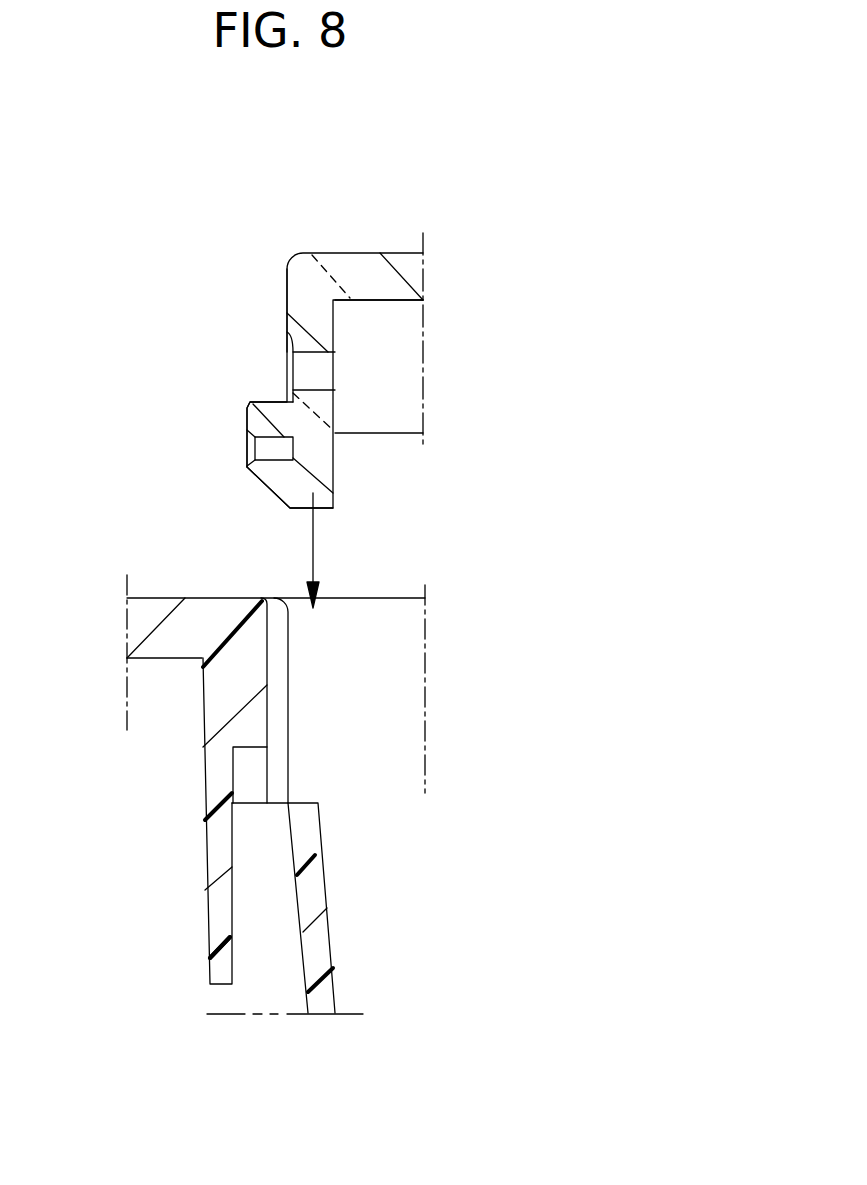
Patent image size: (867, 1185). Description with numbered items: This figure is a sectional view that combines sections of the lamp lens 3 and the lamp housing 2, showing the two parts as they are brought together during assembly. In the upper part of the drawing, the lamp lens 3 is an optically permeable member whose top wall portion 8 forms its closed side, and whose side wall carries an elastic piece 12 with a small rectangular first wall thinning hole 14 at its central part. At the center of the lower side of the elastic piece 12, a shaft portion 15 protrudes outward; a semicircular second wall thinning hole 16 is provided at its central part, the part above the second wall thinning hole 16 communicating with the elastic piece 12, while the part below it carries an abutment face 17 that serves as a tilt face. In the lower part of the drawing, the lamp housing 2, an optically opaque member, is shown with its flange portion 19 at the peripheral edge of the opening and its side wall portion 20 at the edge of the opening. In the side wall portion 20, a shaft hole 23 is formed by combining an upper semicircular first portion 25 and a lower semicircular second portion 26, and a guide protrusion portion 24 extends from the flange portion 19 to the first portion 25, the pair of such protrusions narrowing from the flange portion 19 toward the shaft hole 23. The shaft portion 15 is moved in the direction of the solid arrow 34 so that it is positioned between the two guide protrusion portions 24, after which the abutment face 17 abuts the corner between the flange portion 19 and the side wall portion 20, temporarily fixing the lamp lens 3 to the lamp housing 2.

The lamp housing 2 is at (138, 572).
The lamp lens 3 is at (394, 248).
The top wall portion 8 is at (410, 250).
The elastic piece 12 is at (287, 321).
The first wall thinning hole 14 is at (306, 353).
The shaft portion 15 is at (247, 407).
The second wall thinning hole 16 is at (268, 440).
The abutment face 17 is at (270, 490).
The flange portion 19 is at (202, 613).
The side wall portion 20 is at (208, 928).
The shaft hole 23 is at (368, 880).
The guide protrusion portion 24 is at (288, 683).
The first portion 25 is at (247, 748).
The second portion 26 is at (297, 856).
The solid arrow 34 is at (313, 548).